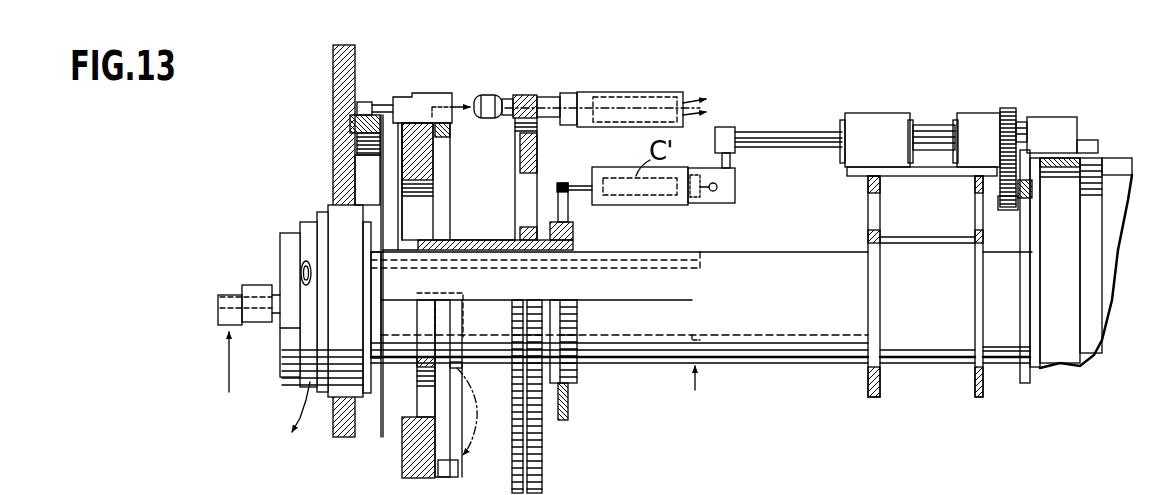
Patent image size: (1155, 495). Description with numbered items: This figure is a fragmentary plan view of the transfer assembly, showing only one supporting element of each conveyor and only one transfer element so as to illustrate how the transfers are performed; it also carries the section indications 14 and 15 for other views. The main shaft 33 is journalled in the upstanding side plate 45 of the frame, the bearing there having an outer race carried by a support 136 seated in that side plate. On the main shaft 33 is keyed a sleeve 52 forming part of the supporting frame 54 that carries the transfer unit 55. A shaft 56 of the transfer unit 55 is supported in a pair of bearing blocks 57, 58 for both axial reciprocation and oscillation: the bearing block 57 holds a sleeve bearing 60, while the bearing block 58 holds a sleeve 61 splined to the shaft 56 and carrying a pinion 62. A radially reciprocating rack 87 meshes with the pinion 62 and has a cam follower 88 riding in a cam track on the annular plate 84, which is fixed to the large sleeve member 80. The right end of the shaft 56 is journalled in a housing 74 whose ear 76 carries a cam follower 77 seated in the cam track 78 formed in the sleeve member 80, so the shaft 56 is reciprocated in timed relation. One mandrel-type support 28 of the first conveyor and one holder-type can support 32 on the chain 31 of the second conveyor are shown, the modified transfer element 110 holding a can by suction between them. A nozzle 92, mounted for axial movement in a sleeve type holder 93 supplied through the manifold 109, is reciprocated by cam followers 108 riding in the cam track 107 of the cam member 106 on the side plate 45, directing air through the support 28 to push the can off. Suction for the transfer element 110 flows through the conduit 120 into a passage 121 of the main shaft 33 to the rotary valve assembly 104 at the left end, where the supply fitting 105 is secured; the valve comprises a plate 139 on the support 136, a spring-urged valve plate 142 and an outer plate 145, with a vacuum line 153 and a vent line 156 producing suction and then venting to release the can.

The side plate 45 is at (334, 54).
The cam member 106 is at (355, 120).
The cam followers 108 is at (357, 142).
The cam track 107 is at (365, 102).
The sleeve type holder 93 is at (428, 95).
The nozzle 92 is at (470, 98).
The support 28 is at (614, 92).
The manifold 109 is at (448, 183).
The section line 14 is at (547, 205).
The section line 15 is at (298, 163).
The can support 32 is at (584, 186).
The chain 31 is at (570, 202).
The conduit 120 is at (693, 247).
The transfer element 110 is at (726, 207).
The shaft 56 is at (787, 130).
The bearing block 58 is at (866, 114).
The sleeve bearing 60 is at (843, 155).
The transfer unit 55 is at (925, 118).
The sleeve 61 is at (950, 118).
The bearing block 57 is at (982, 113).
The pinion 62 is at (1013, 108).
The supporting frame 54 is at (866, 215).
The rack 87 is at (1000, 178).
The cam follower 88 is at (1025, 203).
The housing 74 is at (1065, 117).
The ear 76 is at (1101, 157).
The cam follower 77 is at (1113, 160).
The cam track 78 is at (1090, 255).
The sleeve member 80 is at (1067, 353).
The plate 84 is at (1030, 368).
The main shaft 33 is at (797, 345).
The sleeve 52 is at (912, 352).
The passage 121 is at (661, 335).
The rotary valve assembly 104 is at (274, 234).
The plate 139 is at (330, 207).
The vent line 156 is at (303, 273).
The supply fitting 105 is at (253, 298).
The outer plate 145 is at (290, 328).
The valve plate 142 is at (300, 372).
The vacuum line 153 is at (302, 393).
The support 136 is at (330, 410).